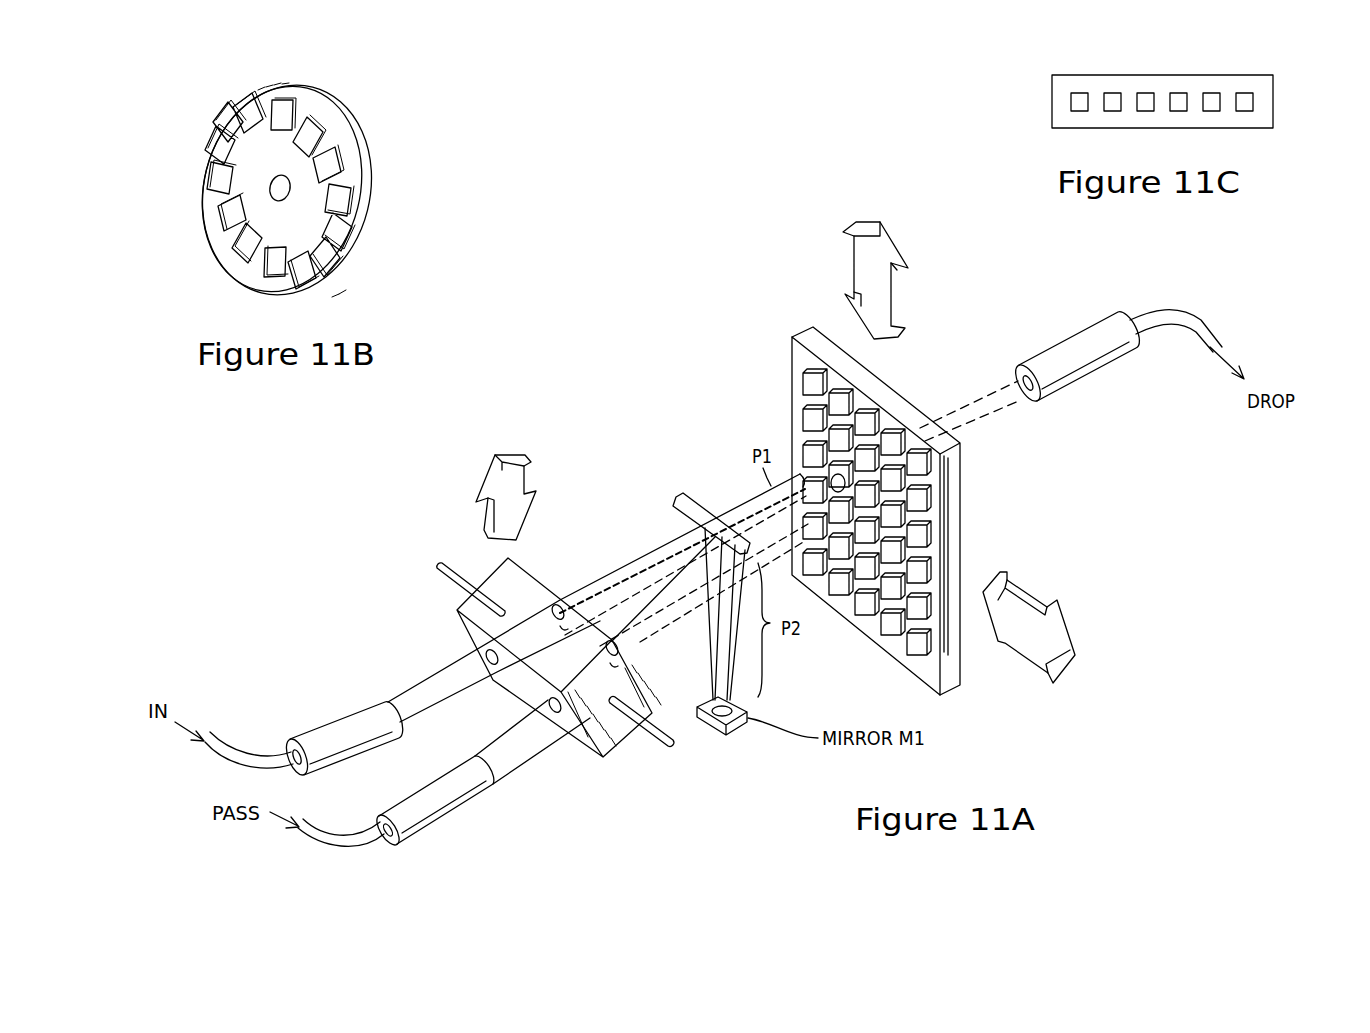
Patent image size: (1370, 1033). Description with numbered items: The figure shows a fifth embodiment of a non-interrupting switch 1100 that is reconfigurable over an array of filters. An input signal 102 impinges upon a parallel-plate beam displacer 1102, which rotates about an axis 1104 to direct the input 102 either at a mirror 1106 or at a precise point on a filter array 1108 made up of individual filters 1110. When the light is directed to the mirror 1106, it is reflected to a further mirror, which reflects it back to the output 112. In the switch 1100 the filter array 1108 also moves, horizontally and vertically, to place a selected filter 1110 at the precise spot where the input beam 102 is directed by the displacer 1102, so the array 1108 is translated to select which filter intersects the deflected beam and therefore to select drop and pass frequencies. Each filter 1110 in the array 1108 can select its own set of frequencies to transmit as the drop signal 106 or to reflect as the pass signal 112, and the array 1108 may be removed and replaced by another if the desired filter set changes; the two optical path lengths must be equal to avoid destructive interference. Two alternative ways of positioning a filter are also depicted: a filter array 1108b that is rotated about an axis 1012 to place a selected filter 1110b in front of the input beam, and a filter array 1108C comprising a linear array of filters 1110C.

In FIG. 11B, the filter array 1108b is at (326, 123).
In FIG. 11B, the filter 1110b is at (332, 193).
In FIG. 11B, the axis 1012 is at (271, 190).
In FIG. 11C, the filter array 1108C is at (1257, 75).
In FIG. 11C, the filter 1110C is at (1080, 94).
In FIG. 11A, the non-interrupting switch 1100 is at (720, 345).
In FIG. 11A, the filter array 1108 is at (955, 533).
In FIG. 11A, the filter 1110 is at (917, 530).
In FIG. 11A, the drop signal 106 is at (1180, 307).
In FIG. 11A, the mirror 1106 is at (692, 497).
In FIG. 11A, the parallel-plate beam displacer 1102 is at (603, 758).
In FIG. 11A, the axis 1104 is at (670, 750).
In FIG. 11A, the input signal 102 is at (210, 742).
In FIG. 11A, the pass signal 112 is at (343, 842).